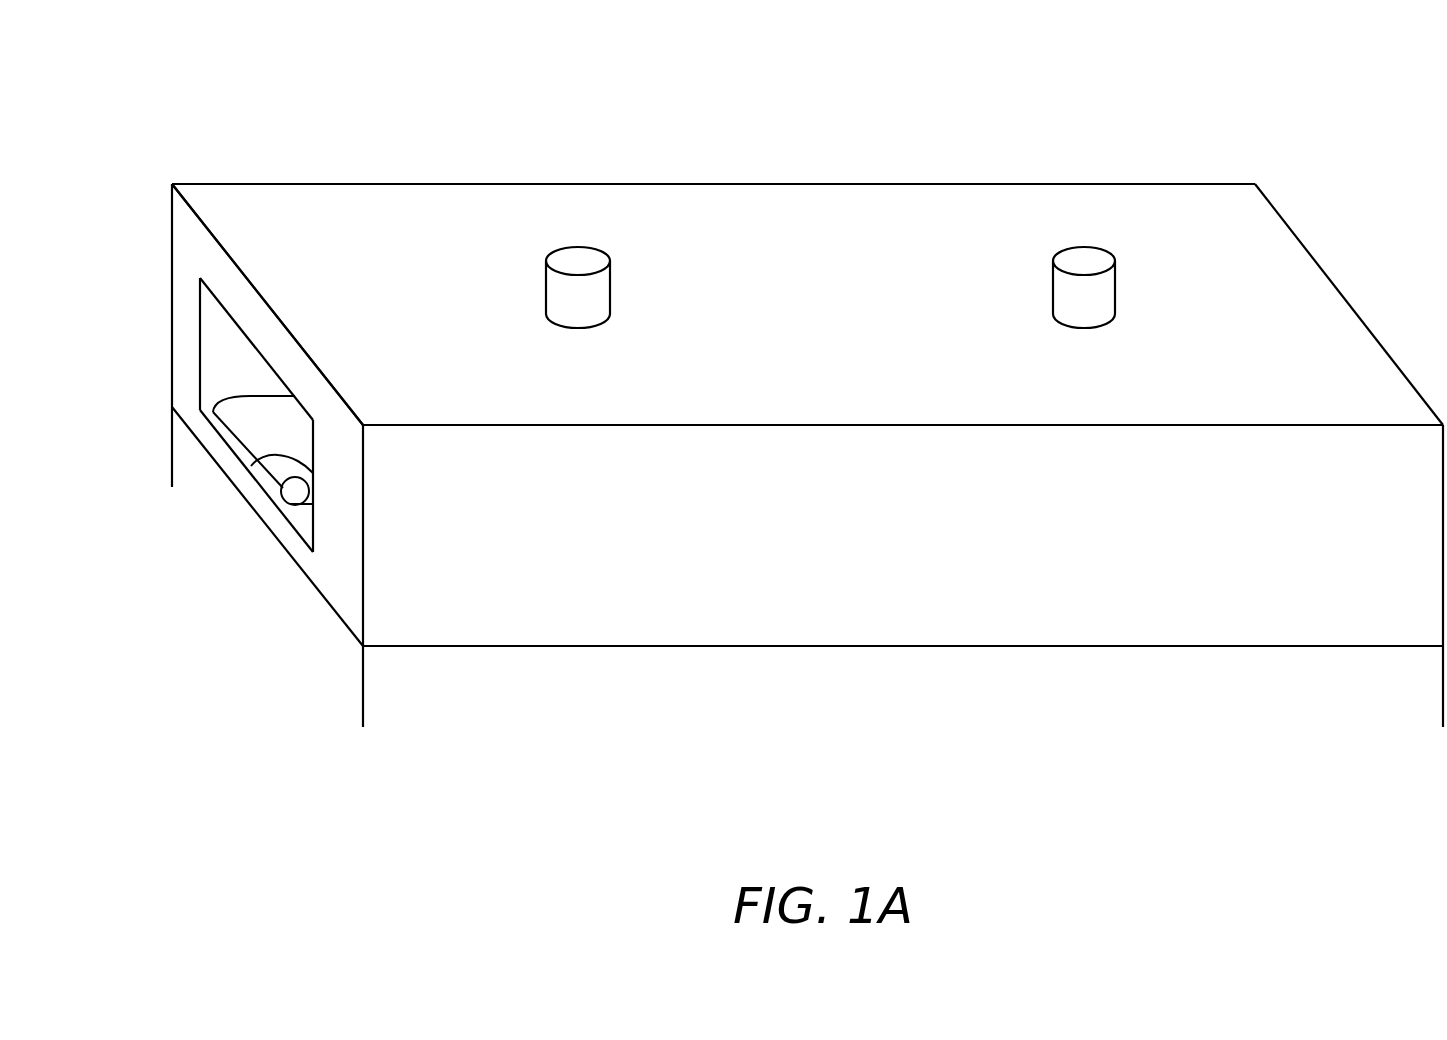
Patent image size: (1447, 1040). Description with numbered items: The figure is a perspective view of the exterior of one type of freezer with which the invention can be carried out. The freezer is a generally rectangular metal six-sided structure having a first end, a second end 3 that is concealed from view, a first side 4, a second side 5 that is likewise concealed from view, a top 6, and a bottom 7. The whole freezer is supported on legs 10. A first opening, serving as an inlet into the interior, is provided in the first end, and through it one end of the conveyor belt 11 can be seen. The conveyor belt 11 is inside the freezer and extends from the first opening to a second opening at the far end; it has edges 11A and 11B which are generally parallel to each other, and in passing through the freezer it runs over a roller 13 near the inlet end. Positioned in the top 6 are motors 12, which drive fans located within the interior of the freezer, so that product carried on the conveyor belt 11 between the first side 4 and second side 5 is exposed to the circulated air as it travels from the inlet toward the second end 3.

The second end 3 is at (1350, 303).
The first side 4 is at (903, 592).
The second side 5 is at (766, 411).
The top 6 is at (437, 311).
The bottom 7 is at (612, 662).
The legs 10 is at (362, 687).
The conveyor belt 11 is at (201, 492).
The edge 11A is at (250, 396).
The edge 11B is at (251, 465).
The motors 12 is at (588, 310).
The roller 13 is at (295, 491).